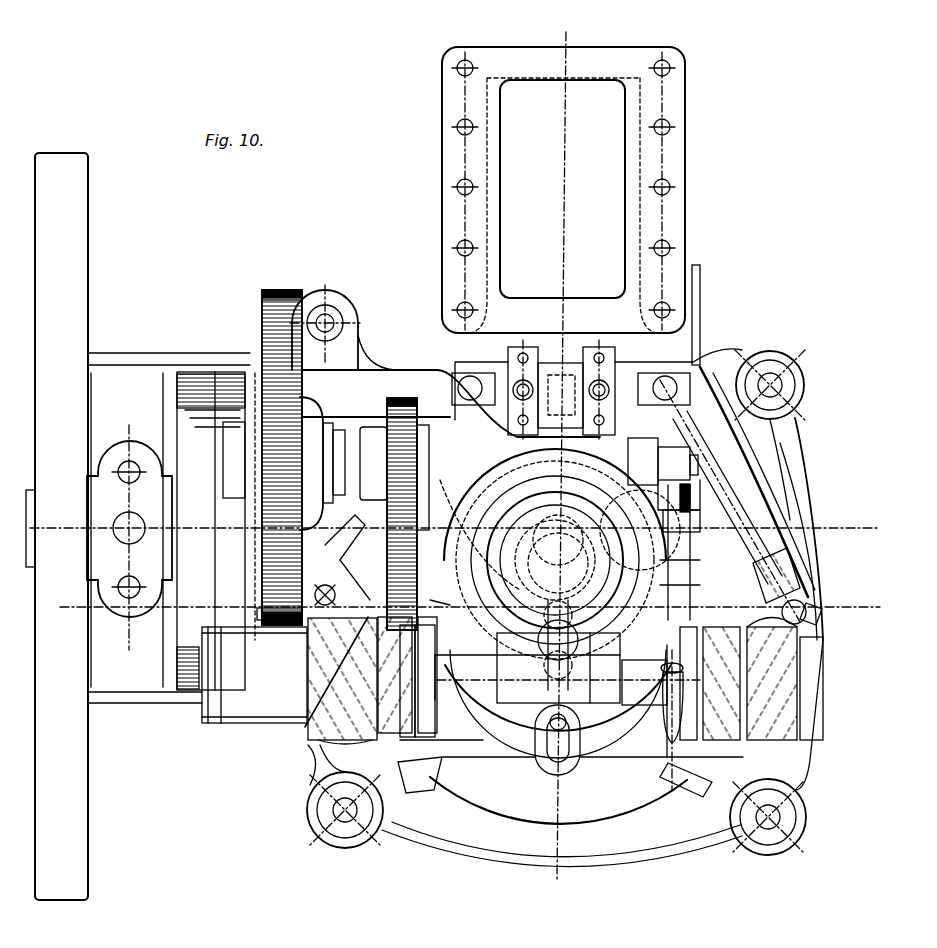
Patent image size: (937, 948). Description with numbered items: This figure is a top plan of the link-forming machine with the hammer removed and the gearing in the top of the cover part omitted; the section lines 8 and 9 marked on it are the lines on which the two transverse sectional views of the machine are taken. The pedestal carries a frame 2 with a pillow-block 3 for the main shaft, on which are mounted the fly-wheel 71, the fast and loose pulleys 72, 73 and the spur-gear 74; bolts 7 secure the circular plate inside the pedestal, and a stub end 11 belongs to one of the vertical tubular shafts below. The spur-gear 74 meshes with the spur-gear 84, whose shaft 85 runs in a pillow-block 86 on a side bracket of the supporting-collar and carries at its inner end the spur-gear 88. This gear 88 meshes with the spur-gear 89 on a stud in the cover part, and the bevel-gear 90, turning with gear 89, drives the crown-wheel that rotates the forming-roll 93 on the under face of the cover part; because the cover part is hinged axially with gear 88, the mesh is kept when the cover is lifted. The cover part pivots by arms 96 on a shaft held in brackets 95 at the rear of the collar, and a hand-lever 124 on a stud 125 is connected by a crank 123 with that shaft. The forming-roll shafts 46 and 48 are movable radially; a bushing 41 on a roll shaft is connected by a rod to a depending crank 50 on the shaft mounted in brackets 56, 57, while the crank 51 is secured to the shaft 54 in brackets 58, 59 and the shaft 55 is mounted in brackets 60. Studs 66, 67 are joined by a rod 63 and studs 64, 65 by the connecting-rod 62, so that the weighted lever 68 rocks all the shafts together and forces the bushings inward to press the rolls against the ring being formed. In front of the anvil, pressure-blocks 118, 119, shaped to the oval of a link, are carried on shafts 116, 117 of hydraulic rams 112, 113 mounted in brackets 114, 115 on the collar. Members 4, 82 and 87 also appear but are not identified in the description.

The frame 2 is at (373, 372).
The pillow-block 3 is at (136, 455).
The cover 4 is at (528, 85).
The bolts 7 is at (420, 372).
The section line 8 is at (730, 614).
The section line 9 is at (570, 459).
The stub end 11 is at (720, 568).
The bushing 41 is at (520, 505).
The forming-roll shaft 46 is at (567, 545).
The forming-roll shaft 48 is at (590, 620).
The depending crank 50 is at (570, 368).
The crank 51 is at (330, 748).
The shaft 54 is at (422, 790).
The shaft 55 is at (693, 785).
The bracket 56 is at (519, 350).
The bracket 57 is at (604, 350).
The bracket 58 is at (322, 712).
The bracket 59 is at (390, 772).
The bracket 60 is at (726, 772).
The connecting-rod 62 is at (340, 545).
The rod 63 is at (785, 475).
The stud 64 is at (317, 584).
The stud 65 is at (472, 378).
The stud 66 is at (665, 376).
The stud 67 is at (790, 598).
The weighted lever 68 is at (700, 312).
The fly-wheel 71 is at (57, 170).
The fast pulley 72 is at (195, 378).
The loose pulley 73 is at (236, 378).
The spur-gear 74 is at (257, 607).
The block 82 is at (745, 705).
The spur-gear 84 is at (286, 298).
The shaft 85 is at (353, 430).
The pillow-block 86 is at (314, 400).
The collar 87 is at (420, 425).
The spur-gear 88 is at (383, 427).
The spur-gear 89 is at (445, 611).
The bevel-gear 90 is at (441, 545).
The forming-roll 93 is at (622, 530).
The bracket 95 is at (640, 450).
The arms 96 is at (690, 505).
The hydraulic ram 112 is at (232, 700).
The hydraulic ram 113 is at (818, 722).
The bracket 114 is at (355, 745).
The bracket 115 is at (800, 740).
The shaft 116 is at (486, 694).
The shaft 117 is at (640, 708).
The pressure-block 118 is at (529, 692).
The pressure-block 119 is at (599, 692).
The crank 123 is at (700, 498).
The hand-lever 124 is at (672, 720).
The stud 125 is at (680, 572).